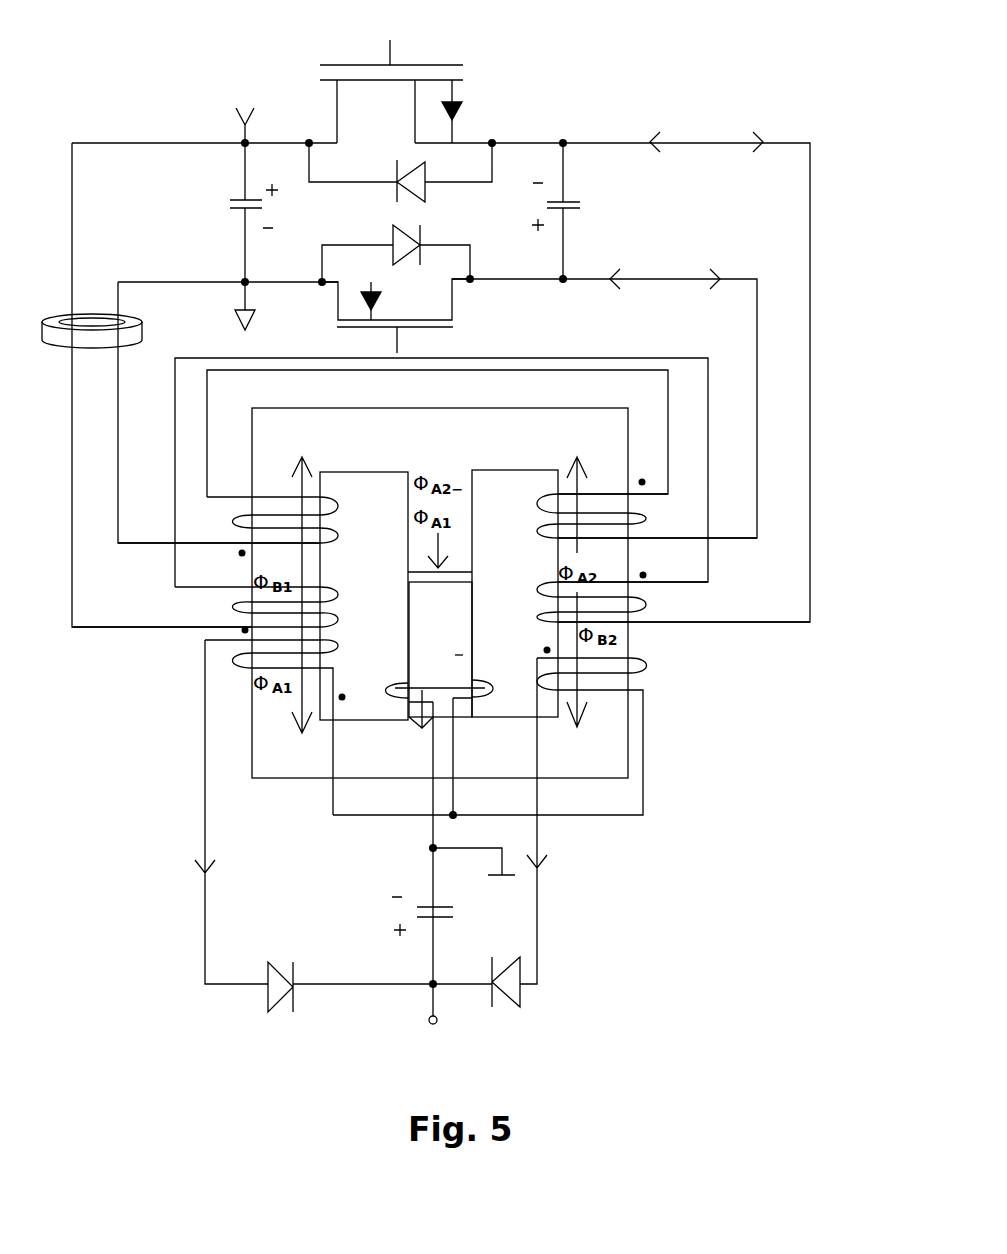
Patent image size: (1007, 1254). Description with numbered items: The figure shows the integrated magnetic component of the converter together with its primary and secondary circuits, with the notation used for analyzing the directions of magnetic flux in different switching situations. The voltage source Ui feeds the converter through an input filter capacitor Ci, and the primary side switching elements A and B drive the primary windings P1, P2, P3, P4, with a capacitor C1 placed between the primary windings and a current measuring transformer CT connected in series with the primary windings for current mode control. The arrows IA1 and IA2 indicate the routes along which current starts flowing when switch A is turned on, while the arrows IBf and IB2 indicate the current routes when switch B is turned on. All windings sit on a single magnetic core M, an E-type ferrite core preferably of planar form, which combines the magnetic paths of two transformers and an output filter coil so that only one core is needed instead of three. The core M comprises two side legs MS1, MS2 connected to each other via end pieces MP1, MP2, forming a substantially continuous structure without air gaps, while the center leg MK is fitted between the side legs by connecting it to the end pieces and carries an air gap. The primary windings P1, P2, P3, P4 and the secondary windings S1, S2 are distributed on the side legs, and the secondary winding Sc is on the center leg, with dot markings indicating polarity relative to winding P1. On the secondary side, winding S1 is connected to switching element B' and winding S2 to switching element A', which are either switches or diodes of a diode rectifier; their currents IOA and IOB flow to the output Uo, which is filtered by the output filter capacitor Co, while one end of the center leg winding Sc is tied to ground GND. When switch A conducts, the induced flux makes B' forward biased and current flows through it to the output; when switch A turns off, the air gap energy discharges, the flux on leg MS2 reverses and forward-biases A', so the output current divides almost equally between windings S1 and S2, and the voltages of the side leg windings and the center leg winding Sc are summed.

The primary side switching element A is at (391, 91).
The primary side switching element B is at (396, 316).
The voltage source Ui is at (230, 122).
The input filter capacitor Ci is at (239, 212).
The capacitor between the primary windings C1 is at (575, 211).
The current measuring transformer CT is at (110, 331).
The current IBf is at (663, 126).
The primary current route IA1 is at (769, 126).
The primary current route IB2 is at (630, 263).
The primary current route IA2 is at (722, 263).
The magnetic core M is at (630, 650).
The center leg MK is at (459, 608).
The side leg MS1 is at (328, 452).
The end piece MP1 is at (398, 452).
The side leg MS2 is at (606, 454).
The end piece MP2 is at (397, 764).
The primary winding P1 is at (247, 520).
The primary winding P2 is at (633, 516).
The primary winding P3 is at (222, 607).
The primary winding P4 is at (660, 603).
The secondary winding S1 is at (285, 727).
The secondary winding S2 is at (490, 736).
The center leg secondary winding Sc is at (432, 680).
The ground GND is at (478, 879).
The output filter capacitor Co is at (431, 924).
The output Uo is at (433, 1038).
The output current IOA is at (231, 812).
The output current IOB is at (560, 821).
The secondary side switching element B' is at (293, 1012).
The secondary side switching element A' is at (528, 1010).